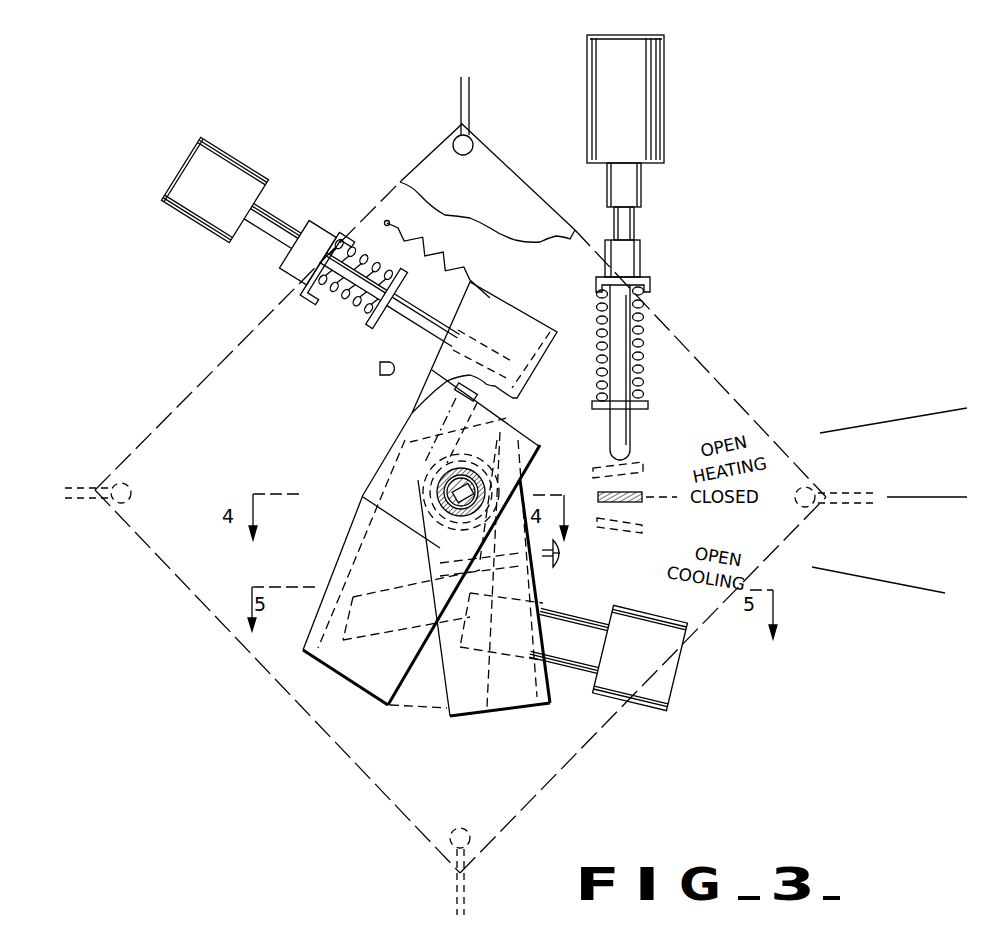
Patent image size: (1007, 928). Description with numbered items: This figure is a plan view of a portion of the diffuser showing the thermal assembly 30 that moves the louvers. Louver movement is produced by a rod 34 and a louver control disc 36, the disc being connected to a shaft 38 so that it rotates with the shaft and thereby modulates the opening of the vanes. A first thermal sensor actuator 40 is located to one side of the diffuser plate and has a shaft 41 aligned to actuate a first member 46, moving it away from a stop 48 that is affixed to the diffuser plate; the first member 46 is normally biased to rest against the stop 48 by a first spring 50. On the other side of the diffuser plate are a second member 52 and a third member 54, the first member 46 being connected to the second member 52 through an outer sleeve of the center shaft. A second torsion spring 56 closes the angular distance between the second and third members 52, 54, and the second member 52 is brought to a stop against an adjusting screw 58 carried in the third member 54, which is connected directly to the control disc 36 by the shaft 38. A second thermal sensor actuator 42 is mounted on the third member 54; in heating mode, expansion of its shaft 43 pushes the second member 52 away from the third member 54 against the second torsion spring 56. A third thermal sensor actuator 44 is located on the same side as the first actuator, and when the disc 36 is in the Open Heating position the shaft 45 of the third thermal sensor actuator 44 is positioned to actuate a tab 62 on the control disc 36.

The thermal assembly 30 is at (229, 338).
The rod 34 is at (86, 490).
The louver control disc 36 is at (259, 423).
The shaft 38 is at (452, 485).
The first thermal sensor actuator 40 is at (228, 175).
The shaft 41 is at (418, 313).
The second thermal sensor actuator 42 is at (720, 686).
The shaft 43 is at (418, 612).
The third thermal sensor actuator 44 is at (653, 142).
The shaft 45 is at (638, 365).
The first member 46 is at (540, 278).
The stop 48 is at (380, 372).
The first spring 50 is at (473, 253).
The second member 52 is at (357, 570).
The third member 54 is at (528, 592).
The second torsion spring 56 is at (493, 492).
The adjusting screw 58 is at (551, 562).
The tab 62 is at (640, 504).